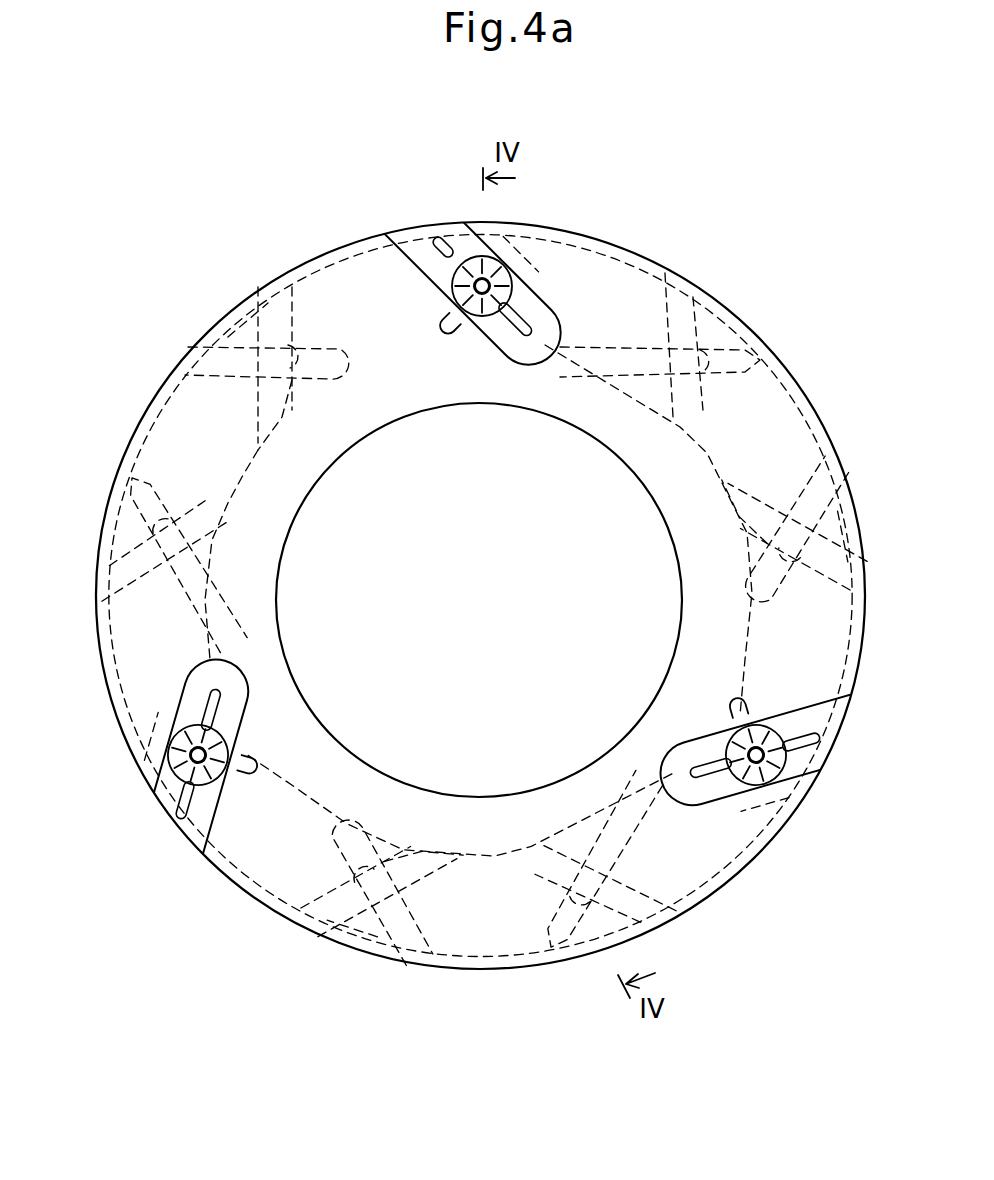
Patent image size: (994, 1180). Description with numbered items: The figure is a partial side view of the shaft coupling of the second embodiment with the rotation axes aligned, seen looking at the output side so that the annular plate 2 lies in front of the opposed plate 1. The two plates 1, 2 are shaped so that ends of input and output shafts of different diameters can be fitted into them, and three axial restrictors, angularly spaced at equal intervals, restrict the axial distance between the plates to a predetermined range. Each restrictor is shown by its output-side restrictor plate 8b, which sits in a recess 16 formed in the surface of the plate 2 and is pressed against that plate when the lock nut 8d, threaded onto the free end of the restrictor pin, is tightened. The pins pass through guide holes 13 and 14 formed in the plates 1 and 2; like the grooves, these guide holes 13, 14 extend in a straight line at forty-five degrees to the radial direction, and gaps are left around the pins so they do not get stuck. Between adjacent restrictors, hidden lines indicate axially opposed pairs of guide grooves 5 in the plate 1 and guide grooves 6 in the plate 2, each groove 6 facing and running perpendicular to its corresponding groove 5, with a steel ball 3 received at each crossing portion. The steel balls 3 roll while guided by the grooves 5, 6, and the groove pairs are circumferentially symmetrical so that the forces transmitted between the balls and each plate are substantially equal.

The plate 1 is at (827, 413).
The plate 2 is at (590, 280).
The steel ball 3 is at (234, 311).
The guide groove 5 is at (276, 310).
The guide groove 6 is at (228, 357).
The restrictor plate 8b is at (478, 316).
The lock nut 8d is at (480, 282).
The guide hole 13 is at (527, 223).
The guide hole 14 is at (427, 232).
The recess 16 is at (417, 266).